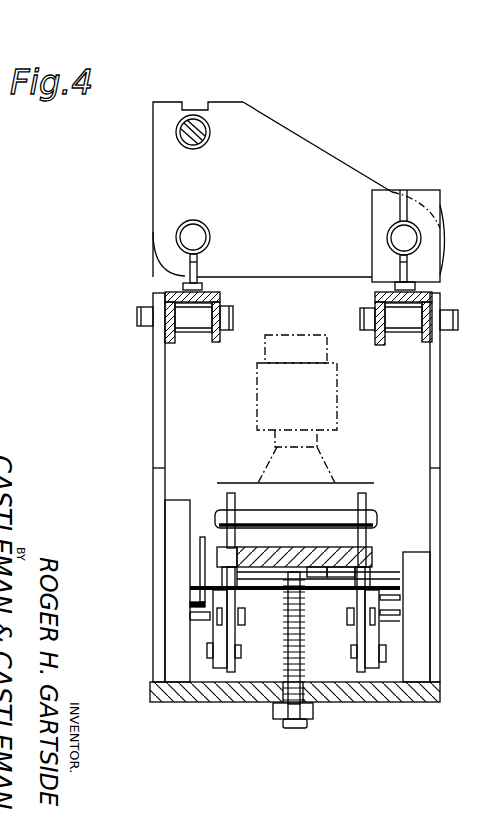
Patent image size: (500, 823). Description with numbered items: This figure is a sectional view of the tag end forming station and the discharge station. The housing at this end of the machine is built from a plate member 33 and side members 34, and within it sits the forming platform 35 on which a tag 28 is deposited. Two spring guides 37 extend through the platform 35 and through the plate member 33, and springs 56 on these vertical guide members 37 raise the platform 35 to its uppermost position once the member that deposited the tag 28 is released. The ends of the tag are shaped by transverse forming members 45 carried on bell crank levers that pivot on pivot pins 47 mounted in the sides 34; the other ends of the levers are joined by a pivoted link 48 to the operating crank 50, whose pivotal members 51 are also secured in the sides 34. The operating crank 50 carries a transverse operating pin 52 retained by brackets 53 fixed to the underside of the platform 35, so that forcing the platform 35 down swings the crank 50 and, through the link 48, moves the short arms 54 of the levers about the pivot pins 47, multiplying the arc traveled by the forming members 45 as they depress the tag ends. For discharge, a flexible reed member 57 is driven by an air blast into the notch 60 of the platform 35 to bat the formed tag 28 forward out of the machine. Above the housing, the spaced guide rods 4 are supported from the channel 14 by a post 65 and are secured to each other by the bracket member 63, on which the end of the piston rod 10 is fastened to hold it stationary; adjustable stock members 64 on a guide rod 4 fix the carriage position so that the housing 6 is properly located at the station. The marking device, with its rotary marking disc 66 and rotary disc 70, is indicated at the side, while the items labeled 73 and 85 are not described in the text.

The guide rods 4 is at (177, 232).
The housing 6 is at (327, 391).
The piston rod 10 is at (194, 120).
The channel 14 is at (211, 345).
The tag 28 is at (246, 462).
The plate member 33 is at (373, 697).
The side members 34 is at (160, 418).
The forming platform 35 is at (313, 567).
The spring guides 37 is at (300, 568).
The transverse forming members 45 is at (209, 509).
The pivot pins 47 is at (200, 605).
The pivoted link 48 is at (222, 655).
The operating crank 50 is at (235, 603).
The pivotal members 51 is at (400, 536).
The transverse operating pin 52 is at (361, 552).
The brackets 53 is at (342, 573).
The short arms 54 is at (217, 635).
The springs 56 is at (280, 678).
The flexible reed member 57 is at (200, 545).
The notch 60 is at (217, 550).
The bracket member 63 is at (302, 141).
The adjustable stock members 64 is at (388, 208).
The post 65 is at (182, 262).
The rotary marking disc 66 is at (491, 693).
The rotary disc 70 is at (493, 668).
The element 73 is at (490, 537).
The funnel 85 is at (318, 463).